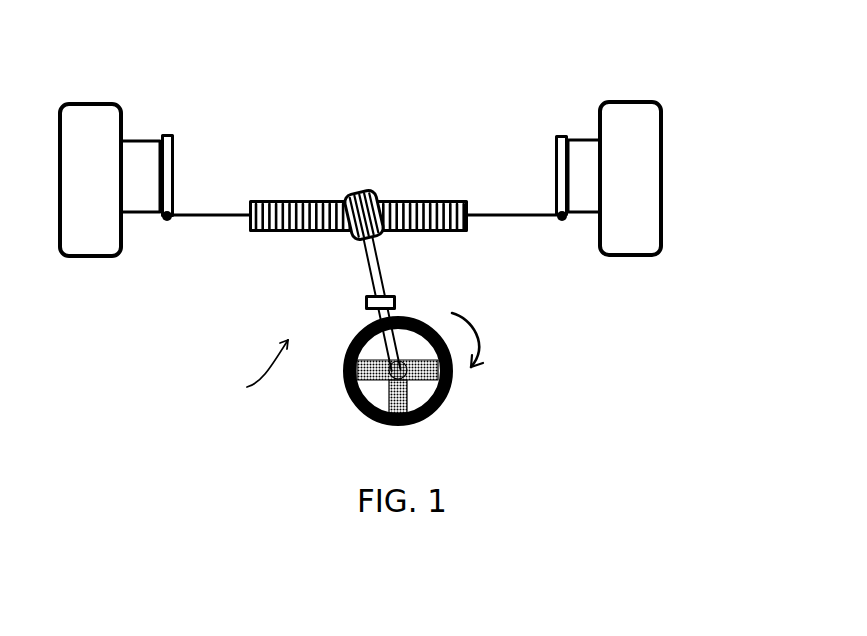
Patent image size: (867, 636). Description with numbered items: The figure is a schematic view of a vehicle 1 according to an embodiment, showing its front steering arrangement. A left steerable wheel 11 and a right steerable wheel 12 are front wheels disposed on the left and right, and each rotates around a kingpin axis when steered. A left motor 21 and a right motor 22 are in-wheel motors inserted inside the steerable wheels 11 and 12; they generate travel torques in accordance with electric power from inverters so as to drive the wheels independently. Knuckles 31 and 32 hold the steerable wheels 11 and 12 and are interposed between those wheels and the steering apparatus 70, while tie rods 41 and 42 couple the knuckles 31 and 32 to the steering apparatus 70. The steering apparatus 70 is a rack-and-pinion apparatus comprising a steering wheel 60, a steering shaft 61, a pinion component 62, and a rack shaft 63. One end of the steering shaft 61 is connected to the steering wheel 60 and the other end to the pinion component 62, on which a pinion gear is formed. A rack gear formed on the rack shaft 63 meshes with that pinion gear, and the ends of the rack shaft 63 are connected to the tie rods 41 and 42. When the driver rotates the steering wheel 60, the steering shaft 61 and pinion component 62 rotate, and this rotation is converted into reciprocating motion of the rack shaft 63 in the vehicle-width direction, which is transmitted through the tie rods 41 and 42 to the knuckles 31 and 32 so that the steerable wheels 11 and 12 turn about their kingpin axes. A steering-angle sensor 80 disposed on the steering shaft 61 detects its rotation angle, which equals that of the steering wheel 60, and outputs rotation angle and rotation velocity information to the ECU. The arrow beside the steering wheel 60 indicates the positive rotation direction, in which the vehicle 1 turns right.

The vehicle 1 is at (716, 72).
The left steerable wheel 11 is at (93, 102).
The right steerable wheel 12 is at (663, 160).
The left motor 21 is at (139, 140).
The right motor 22 is at (582, 138).
The knuckle 31 is at (167, 134).
The knuckle 32 is at (561, 135).
The tie rod 41 is at (212, 218).
The tie rod 42 is at (517, 218).
The steering wheel 60 is at (453, 370).
The steering shaft 61 is at (383, 285).
The pinion component 62 is at (357, 193).
The rack shaft 63 is at (312, 200).
The steering apparatus 70 is at (249, 372).
The steering-angle sensor 80 is at (365, 298).